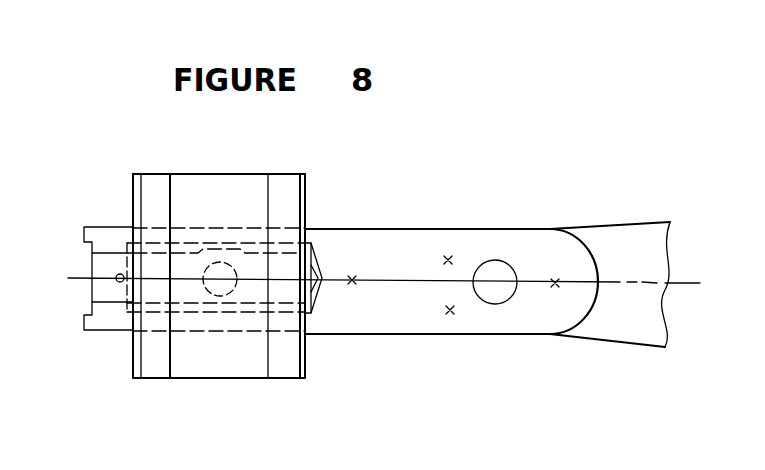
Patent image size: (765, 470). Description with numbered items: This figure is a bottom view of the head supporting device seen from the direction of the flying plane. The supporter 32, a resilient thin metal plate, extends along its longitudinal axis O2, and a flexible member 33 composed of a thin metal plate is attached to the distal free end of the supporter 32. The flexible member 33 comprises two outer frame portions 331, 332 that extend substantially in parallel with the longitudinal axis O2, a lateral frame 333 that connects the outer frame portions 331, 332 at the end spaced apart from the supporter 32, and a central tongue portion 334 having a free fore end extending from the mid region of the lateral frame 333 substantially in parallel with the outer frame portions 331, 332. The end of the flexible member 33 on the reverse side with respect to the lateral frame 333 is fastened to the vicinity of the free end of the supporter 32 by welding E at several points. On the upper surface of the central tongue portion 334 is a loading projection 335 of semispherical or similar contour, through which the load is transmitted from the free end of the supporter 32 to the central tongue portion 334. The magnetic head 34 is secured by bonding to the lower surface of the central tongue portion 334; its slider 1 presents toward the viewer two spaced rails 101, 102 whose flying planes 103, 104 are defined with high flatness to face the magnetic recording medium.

The slider 1 is at (220, 360).
The rail 101 is at (153, 367).
The rail 102 is at (283, 362).
The flying plane 103 is at (155, 188).
The flying plane 104 is at (283, 198).
The magnetic head 34 is at (219, 174).
The flexible member 33 is at (397, 253).
The outer frame portion 331 is at (193, 227).
The outer frame portion 332 is at (195, 322).
The lateral frame 333 is at (120, 303).
The central tongue portion 334 is at (308, 282).
The loading projection 335 is at (235, 290).
The supporter 32 is at (592, 323).
The longitudinal axis O2 is at (688, 283).
The welding E is at (352, 280).